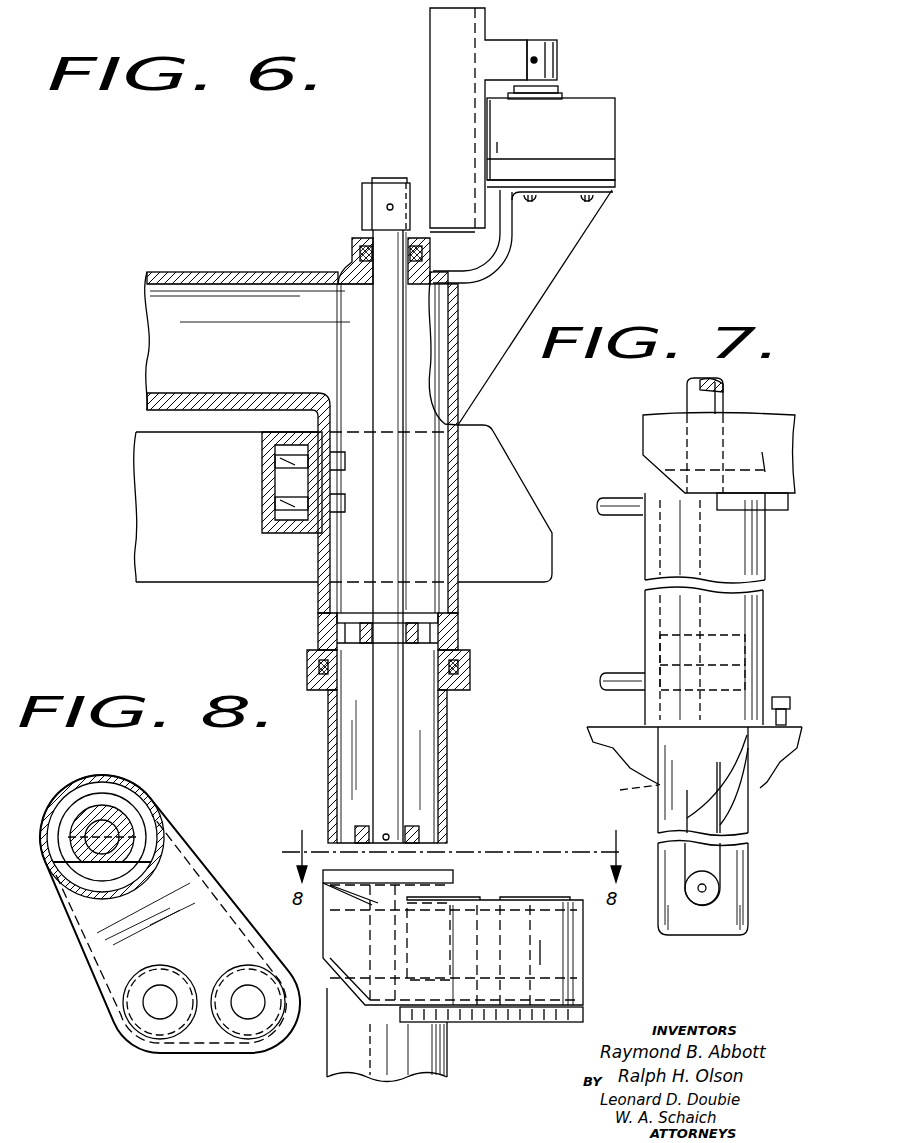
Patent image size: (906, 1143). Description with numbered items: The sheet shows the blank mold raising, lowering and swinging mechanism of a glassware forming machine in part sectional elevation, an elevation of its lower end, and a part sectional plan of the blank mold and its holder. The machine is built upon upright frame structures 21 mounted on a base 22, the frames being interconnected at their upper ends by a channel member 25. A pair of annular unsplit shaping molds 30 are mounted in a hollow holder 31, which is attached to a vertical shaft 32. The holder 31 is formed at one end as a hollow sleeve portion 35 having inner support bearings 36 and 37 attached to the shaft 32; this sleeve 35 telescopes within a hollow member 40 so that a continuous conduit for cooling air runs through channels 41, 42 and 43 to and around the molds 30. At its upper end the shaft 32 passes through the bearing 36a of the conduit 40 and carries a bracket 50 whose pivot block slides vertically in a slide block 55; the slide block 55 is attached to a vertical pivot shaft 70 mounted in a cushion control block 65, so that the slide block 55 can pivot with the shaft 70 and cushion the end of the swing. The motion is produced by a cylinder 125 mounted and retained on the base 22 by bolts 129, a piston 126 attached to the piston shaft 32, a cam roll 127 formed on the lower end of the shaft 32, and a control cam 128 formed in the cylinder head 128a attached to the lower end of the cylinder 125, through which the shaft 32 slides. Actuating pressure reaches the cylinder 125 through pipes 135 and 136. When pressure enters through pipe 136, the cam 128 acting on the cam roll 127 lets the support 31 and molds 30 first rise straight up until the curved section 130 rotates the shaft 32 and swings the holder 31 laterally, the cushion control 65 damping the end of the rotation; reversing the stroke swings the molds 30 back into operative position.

In FIG. 6, the upright frame structures 21 is at (186, 528).
In FIG. 7, the base 22 is at (612, 740).
In FIG. 6, the channel member 25 is at (292, 527).
In FIG. 8, the annular unsplit shaping molds 30 is at (230, 984).
In FIG. 6, the hollow holder 31 is at (584, 964).
In FIG. 7, the hollow holder 31 is at (650, 437).
In FIG. 8, the hollow holder 31 is at (110, 965).
In FIG. 6, the vertical shaft 32 is at (392, 180).
In FIG. 7, the vertical shaft 32 is at (692, 395).
In FIG. 8, the vertical shaft 32 is at (105, 828).
In FIG. 6, the hollow sleeve portion 35 is at (447, 758).
In FIG. 8, the hollow sleeve portion 35 is at (148, 836).
In FIG. 6, the inner support bearing 36 is at (420, 636).
In FIG. 6, the bearing 36a is at (352, 252).
In FIG. 6, the inner support bearing 37 is at (420, 832).
In FIG. 6, the hollow member 40 is at (458, 550).
In FIG. 6, the channel 41 is at (258, 361).
In FIG. 6, the channel 42 is at (433, 512).
In FIG. 6, the channel 43 is at (425, 725).
In FIG. 8, the channel 43 is at (116, 888).
In FIG. 6, the bracket 50 is at (362, 204).
In FIG. 6, the slide block 55 is at (462, 81).
In FIG. 6, the cushion control block 65 is at (578, 131).
In FIG. 6, the vertical pivot shaft 70 is at (534, 40).
In FIG. 6, the cylinder 125 is at (330, 1050).
In FIG. 7, the cylinder 125 is at (648, 554).
In FIG. 7, the piston 126 is at (675, 662).
In FIG. 7, the cam roll 127 is at (718, 892).
In FIG. 7, the control cam 128 is at (722, 860).
In FIG. 7, the cylinder head 128a is at (688, 922).
In FIG. 7, the bolts 129 is at (787, 697).
In FIG. 7, the curved section 130 is at (735, 768).
In FIG. 7, the pipe 135 is at (628, 482).
In FIG. 7, the pipe 136 is at (623, 673).